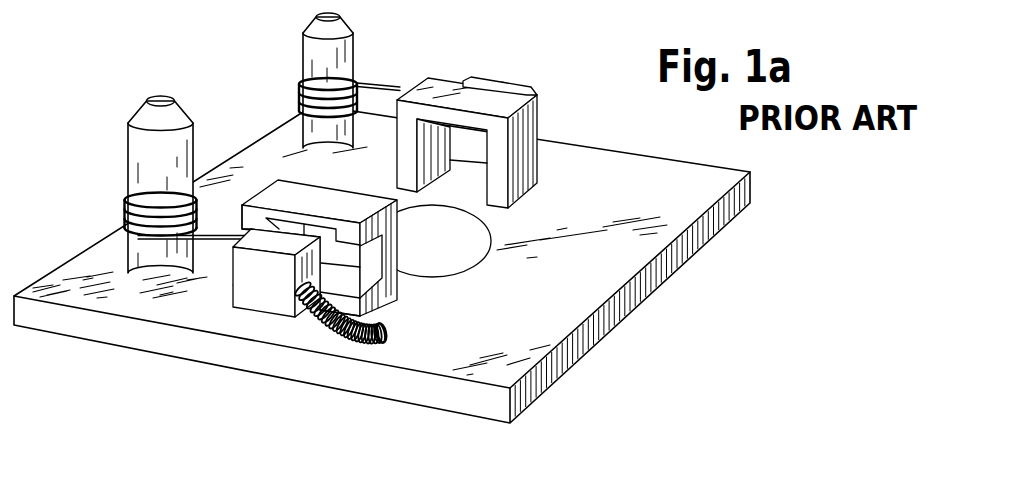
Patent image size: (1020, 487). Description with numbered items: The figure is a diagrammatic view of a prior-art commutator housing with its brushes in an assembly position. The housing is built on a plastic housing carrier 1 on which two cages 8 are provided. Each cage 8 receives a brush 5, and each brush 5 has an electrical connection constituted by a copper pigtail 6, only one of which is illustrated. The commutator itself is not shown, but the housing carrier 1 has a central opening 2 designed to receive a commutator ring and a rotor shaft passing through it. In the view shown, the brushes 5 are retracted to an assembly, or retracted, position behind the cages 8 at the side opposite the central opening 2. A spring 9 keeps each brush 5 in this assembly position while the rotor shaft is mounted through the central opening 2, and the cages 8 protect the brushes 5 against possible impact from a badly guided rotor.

The housing carrier 1 is at (667, 268).
The central opening 2 is at (443, 243).
The brush 5 is at (270, 296).
The copper pigtail 6 is at (330, 345).
The cage 8 is at (273, 193).
The spring 9 is at (124, 211).